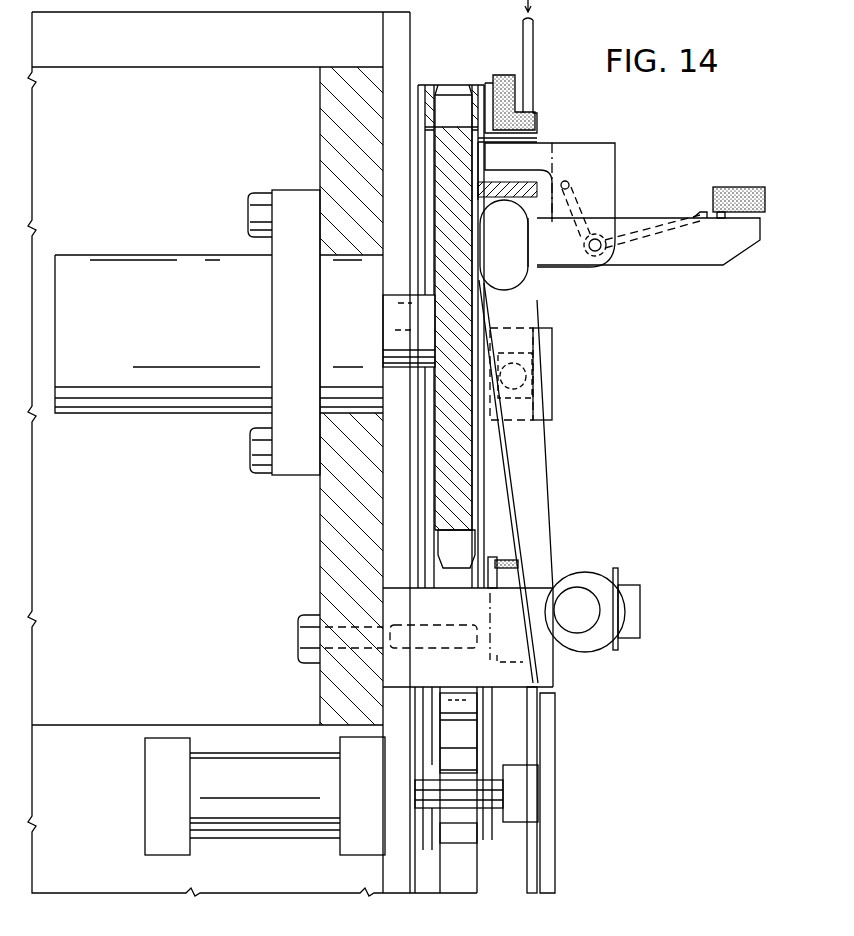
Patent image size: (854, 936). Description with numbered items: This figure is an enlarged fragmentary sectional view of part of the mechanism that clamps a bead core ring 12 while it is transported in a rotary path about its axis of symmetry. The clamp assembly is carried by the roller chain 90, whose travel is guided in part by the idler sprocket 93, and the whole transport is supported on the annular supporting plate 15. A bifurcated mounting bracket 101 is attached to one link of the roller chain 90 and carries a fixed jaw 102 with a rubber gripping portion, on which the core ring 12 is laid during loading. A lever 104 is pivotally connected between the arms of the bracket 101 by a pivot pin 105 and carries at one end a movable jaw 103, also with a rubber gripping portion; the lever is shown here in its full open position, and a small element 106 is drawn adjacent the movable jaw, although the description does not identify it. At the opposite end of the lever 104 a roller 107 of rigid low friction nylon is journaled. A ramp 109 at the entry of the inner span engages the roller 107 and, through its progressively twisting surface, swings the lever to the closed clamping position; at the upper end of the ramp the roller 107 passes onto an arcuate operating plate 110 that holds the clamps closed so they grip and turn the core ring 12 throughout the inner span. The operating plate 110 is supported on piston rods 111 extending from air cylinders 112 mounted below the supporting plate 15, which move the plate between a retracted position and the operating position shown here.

The core ring 12 is at (523, 40).
The annular supporting plate 15 is at (323, 508).
The roller chain 90 is at (423, 517).
The idler sprocket 93 is at (445, 152).
The bifurcated mounting bracket 101 is at (597, 143).
The fixed jaw 102 is at (513, 83).
The movable jaw 103 is at (753, 167).
The lever 104 is at (695, 257).
The pivot pin 105 is at (600, 230).
The stop 106 is at (700, 213).
The roller 107 is at (520, 283).
The ramp 109 is at (535, 472).
The arcuate operating plate 110 is at (550, 843).
The piston rods 111 is at (468, 803).
The air cylinders 112 is at (258, 820).